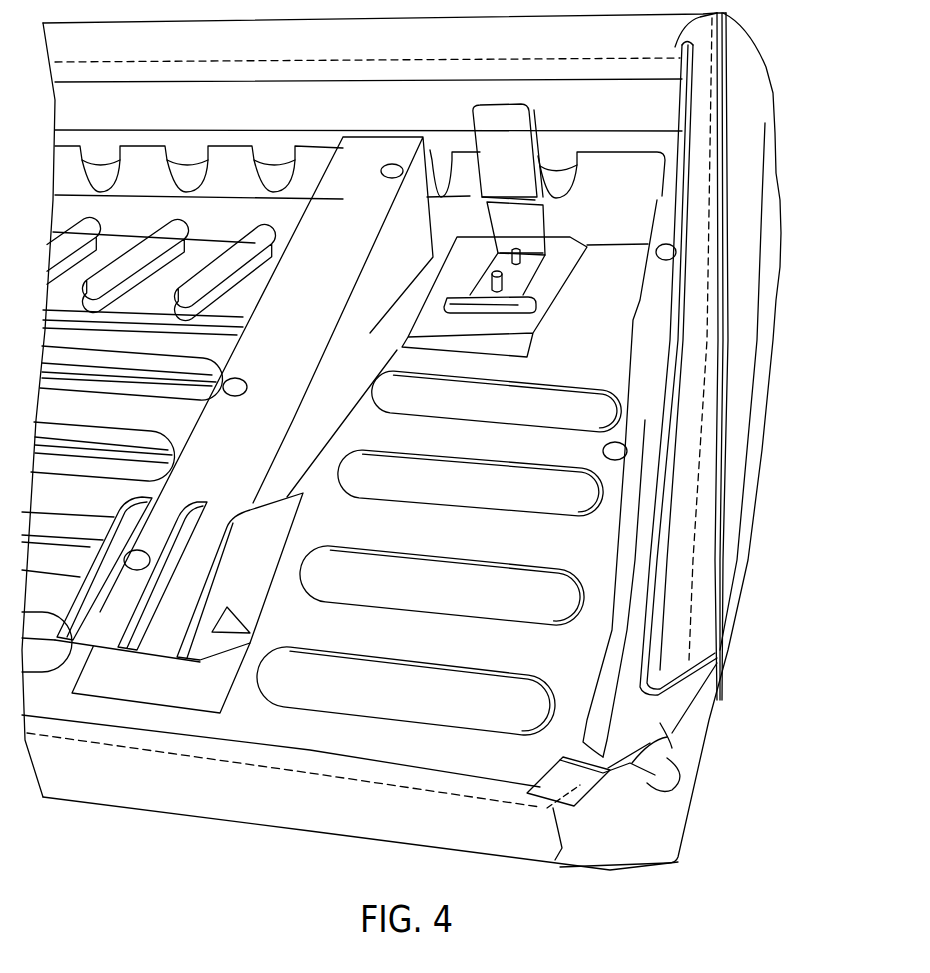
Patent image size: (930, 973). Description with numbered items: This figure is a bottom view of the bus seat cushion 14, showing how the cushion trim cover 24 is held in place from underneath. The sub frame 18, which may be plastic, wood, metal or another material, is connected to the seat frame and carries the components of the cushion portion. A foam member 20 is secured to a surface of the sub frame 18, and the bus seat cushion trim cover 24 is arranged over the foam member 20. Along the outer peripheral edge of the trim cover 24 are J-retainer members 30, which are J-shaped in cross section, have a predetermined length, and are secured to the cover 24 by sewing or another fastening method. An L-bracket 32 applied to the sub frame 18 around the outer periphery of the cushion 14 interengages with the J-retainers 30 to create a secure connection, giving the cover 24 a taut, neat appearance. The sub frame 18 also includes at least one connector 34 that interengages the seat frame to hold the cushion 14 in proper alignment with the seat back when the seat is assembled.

The bus seat cushion member 14 is at (780, 247).
The sub frame 18 is at (578, 682).
The foam member 20 is at (662, 727).
The bus seat cushion trim cover 24 is at (740, 283).
The J-retainer member 30 is at (700, 590).
The L-bracket 32 is at (633, 540).
The connector 34 is at (500, 102).